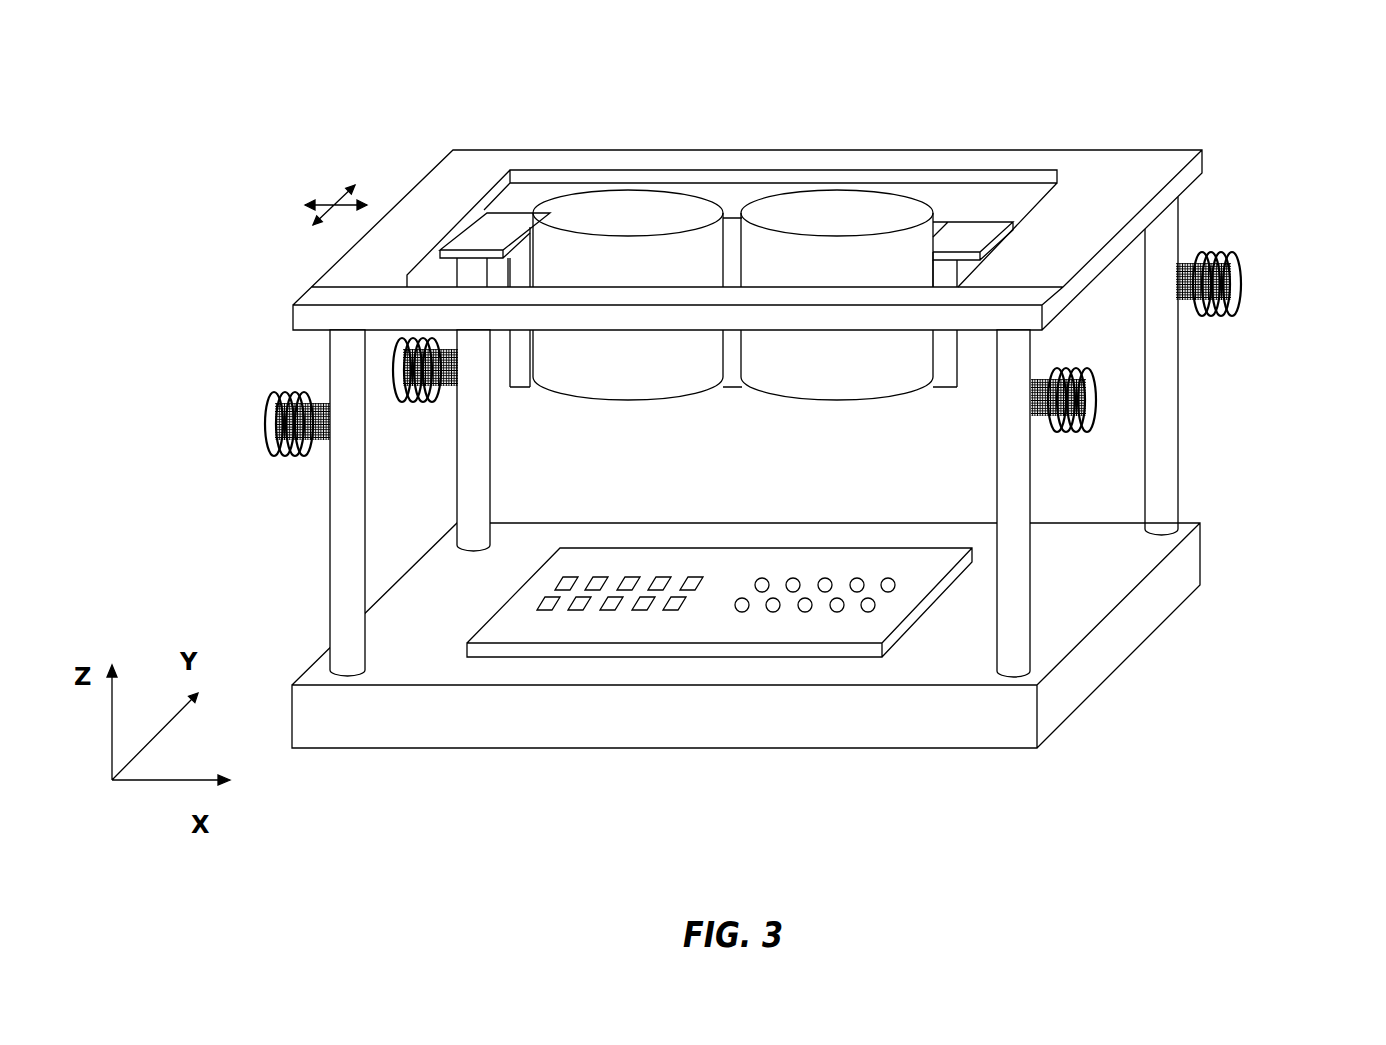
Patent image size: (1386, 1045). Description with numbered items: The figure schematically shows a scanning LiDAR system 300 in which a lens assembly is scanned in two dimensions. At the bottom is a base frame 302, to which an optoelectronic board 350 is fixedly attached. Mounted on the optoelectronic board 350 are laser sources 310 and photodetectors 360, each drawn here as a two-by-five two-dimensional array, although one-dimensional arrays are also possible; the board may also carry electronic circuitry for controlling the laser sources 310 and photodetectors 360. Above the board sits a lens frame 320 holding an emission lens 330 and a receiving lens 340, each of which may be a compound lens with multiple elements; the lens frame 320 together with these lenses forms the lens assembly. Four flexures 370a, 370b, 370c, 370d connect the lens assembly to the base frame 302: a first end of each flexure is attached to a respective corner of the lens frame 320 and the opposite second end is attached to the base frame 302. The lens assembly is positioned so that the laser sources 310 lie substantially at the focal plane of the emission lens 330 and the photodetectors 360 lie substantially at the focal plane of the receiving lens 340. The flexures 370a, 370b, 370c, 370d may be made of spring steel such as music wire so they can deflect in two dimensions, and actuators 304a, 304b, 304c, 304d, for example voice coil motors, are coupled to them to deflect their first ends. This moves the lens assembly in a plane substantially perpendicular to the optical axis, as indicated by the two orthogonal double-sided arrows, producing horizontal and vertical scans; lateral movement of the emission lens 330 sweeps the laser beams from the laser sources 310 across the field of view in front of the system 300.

The scanning LiDAR system 300 is at (330, 112).
The base frame 302 is at (1108, 657).
The actuator 304a is at (1090, 375).
The actuator 304b is at (1235, 260).
The actuator 304c is at (395, 352).
The actuator 304d is at (265, 400).
The laser sources 310 is at (742, 612).
The lens frame 320 is at (1093, 185).
The emission lens 330 is at (837, 215).
The receiving lens 340 is at (628, 213).
The optoelectronic board 350 is at (927, 603).
The photodetectors 360 is at (550, 610).
The flexure 370a is at (1065, 472).
The flexure 370b is at (1180, 422).
The flexure 370c is at (473, 483).
The flexure 370d is at (338, 540).